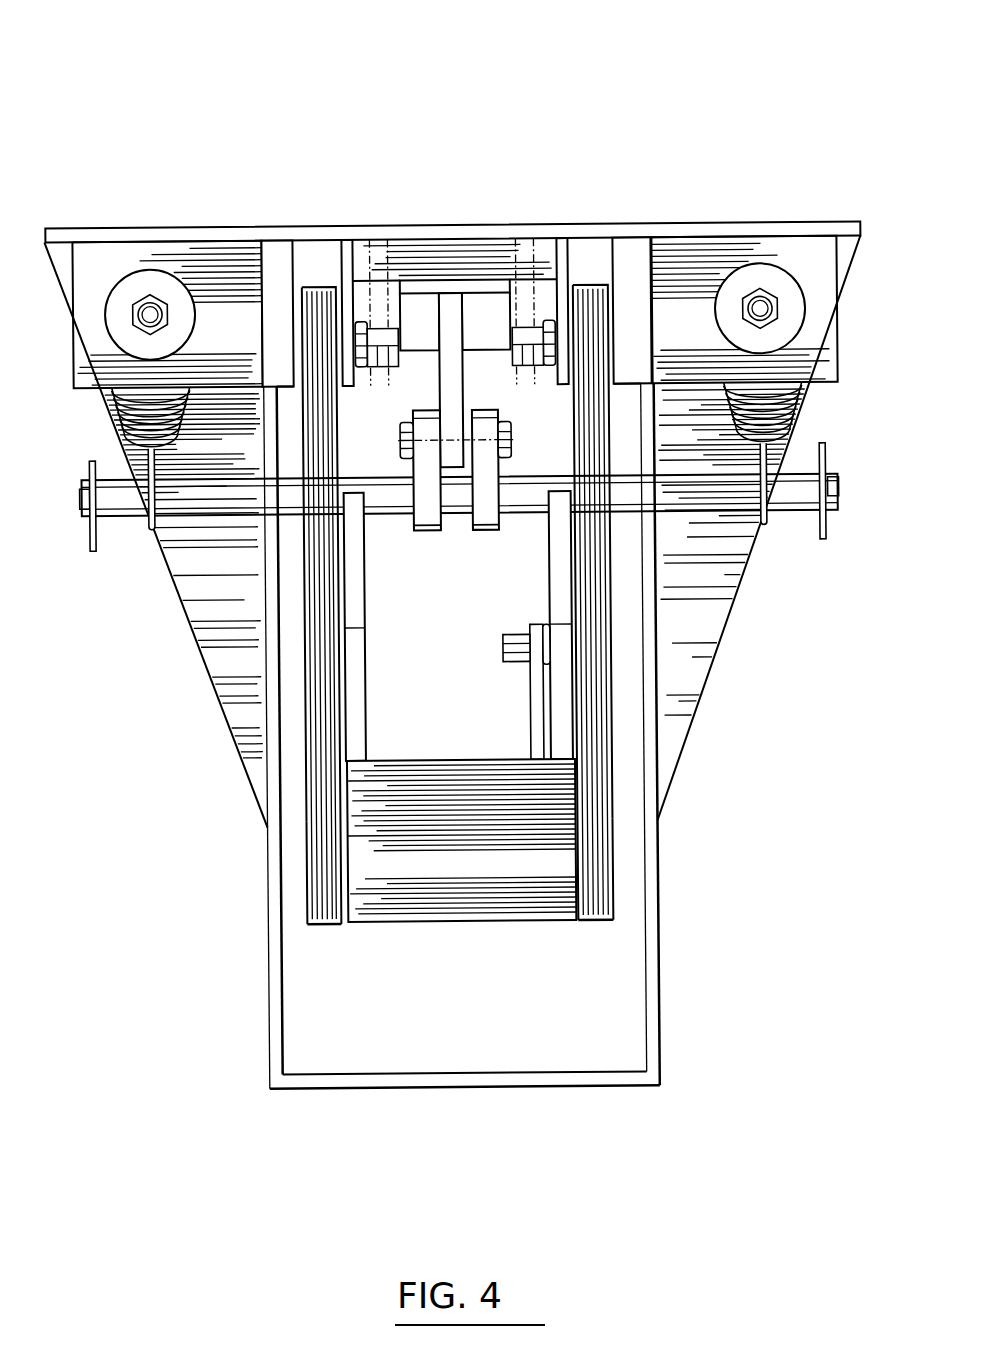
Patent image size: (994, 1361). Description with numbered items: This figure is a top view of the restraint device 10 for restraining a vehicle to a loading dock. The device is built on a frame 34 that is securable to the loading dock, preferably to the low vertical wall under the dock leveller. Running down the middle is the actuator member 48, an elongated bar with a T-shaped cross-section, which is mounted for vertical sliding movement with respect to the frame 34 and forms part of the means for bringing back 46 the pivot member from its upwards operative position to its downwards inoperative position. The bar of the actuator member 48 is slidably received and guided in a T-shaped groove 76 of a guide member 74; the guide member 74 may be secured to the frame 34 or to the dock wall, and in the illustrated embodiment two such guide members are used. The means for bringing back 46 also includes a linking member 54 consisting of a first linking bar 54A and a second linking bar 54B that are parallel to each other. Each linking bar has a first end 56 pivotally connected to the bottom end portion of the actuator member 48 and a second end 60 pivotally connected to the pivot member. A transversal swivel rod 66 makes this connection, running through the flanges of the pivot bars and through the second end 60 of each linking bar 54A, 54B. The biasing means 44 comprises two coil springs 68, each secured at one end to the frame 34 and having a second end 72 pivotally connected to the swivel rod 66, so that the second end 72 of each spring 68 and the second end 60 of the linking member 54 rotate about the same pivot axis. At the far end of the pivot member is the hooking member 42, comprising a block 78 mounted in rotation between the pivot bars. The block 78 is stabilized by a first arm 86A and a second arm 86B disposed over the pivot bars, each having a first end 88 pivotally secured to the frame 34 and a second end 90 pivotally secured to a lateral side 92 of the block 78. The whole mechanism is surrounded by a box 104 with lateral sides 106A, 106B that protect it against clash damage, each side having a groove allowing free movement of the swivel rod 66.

The restraint device 10 is at (335, 92).
The frame 34 is at (90, 236).
The hooking member 42 is at (455, 957).
The biasing means 44 is at (72, 458).
The means for bringing back 46 is at (560, 407).
The actuator member 48 is at (462, 392).
The linking member 54 is at (461, 542).
The first linking bar 54A is at (485, 470).
The second linking bar 54B is at (422, 468).
The first end of linking bar 56 is at (425, 413).
The second end of linking bar 60 is at (415, 530).
The transversal swivel rod 66 is at (96, 548).
The coil spring 68 is at (112, 414).
The second end of coil spring 72 is at (150, 528).
The guide member 74 is at (399, 244).
The T-shaped groove 76 is at (472, 282).
The block 78 is at (528, 905).
The first arm 86A is at (610, 855).
The second arm 86B is at (312, 830).
The first end of arm 88 is at (322, 286).
The second end of arm 90 is at (312, 910).
The lateral side of block 92 is at (348, 923).
The box 104 is at (451, 1107).
The lateral side of box 106A is at (655, 1037).
The lateral side of box 106B is at (268, 1018).